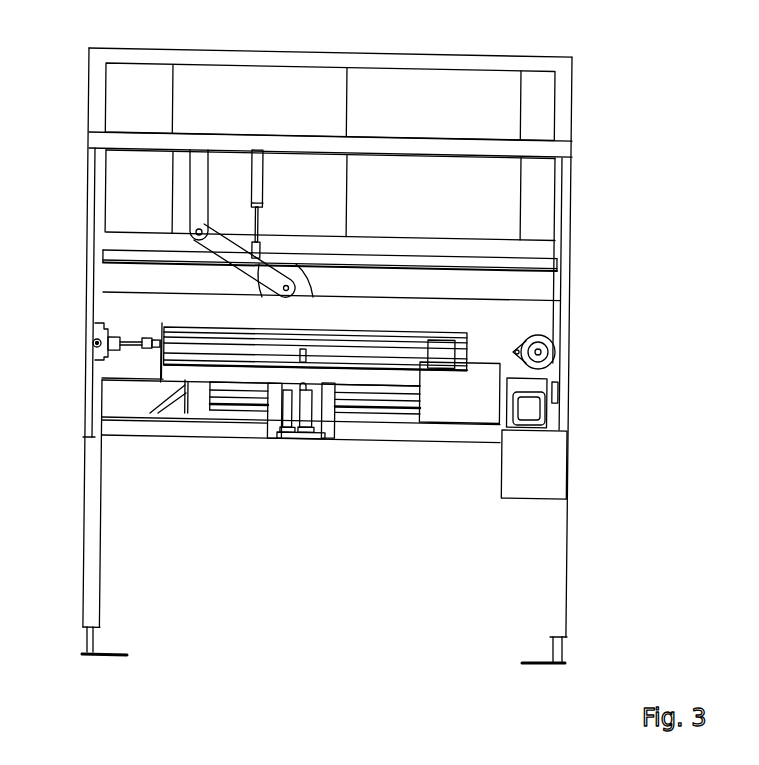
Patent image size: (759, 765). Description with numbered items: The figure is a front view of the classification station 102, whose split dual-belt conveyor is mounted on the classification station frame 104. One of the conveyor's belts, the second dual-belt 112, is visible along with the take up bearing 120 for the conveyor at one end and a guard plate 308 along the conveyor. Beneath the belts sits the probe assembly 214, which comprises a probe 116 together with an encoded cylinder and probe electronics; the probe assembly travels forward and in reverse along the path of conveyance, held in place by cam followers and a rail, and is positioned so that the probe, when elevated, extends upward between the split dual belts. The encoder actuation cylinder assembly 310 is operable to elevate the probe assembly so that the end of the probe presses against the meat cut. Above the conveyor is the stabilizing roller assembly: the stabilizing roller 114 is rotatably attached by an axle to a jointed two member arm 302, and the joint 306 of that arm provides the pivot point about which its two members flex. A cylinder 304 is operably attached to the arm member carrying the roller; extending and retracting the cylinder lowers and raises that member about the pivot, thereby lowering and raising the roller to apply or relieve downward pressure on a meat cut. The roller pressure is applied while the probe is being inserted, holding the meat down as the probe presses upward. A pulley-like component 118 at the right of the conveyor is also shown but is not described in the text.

The classification station 102 is at (607, 137).
The classification station frame 104 is at (563, 155).
The second dual-belt 112 is at (462, 400).
The stabilizing roller 114 is at (300, 279).
The probe 116 is at (306, 393).
The pulley 118 is at (556, 349).
The take up bearing 120 is at (94, 346).
The probe assembly 214 is at (278, 412).
The jointed two member arm 302 is at (200, 178).
The cylinder 304 is at (258, 167).
The joint 306 is at (196, 231).
The guard plate 308 is at (538, 318).
The encoder actuation cylinder assembly 310 is at (308, 362).